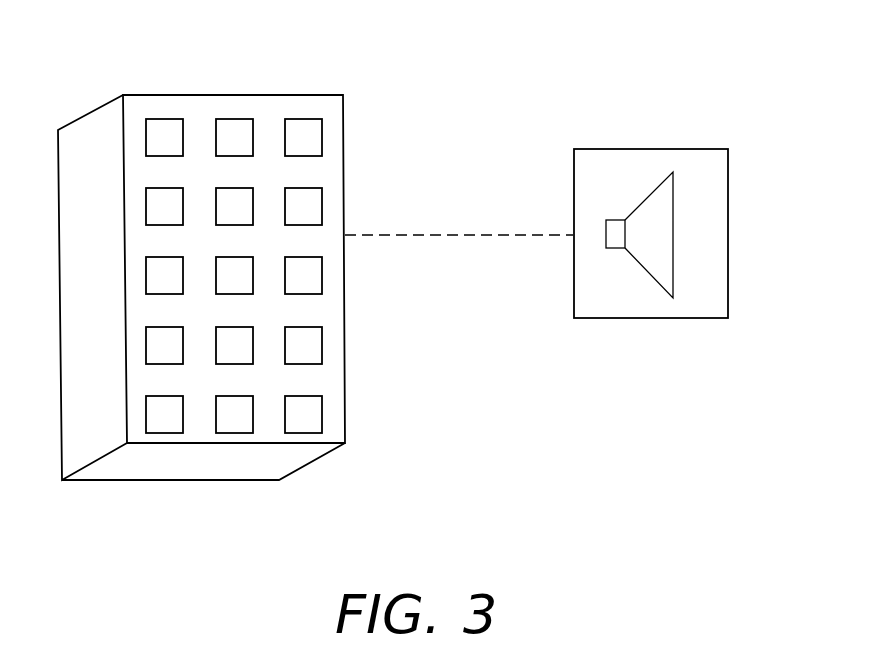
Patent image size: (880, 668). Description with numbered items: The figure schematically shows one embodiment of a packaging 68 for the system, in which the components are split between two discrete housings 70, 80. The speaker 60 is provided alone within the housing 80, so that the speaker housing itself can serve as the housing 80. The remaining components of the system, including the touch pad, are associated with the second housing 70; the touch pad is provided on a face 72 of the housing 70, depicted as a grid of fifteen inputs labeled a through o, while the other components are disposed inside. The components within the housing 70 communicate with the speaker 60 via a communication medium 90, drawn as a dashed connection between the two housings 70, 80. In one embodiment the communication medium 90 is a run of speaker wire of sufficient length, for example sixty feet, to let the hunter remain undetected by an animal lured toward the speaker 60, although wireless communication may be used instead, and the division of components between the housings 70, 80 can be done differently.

The housing 70 is at (217, 92).
The face 72 is at (305, 105).
The housing 80 is at (667, 148).
The speaker 60 is at (673, 198).
The communication medium 90 is at (502, 235).
The packaging 68 is at (458, 343).